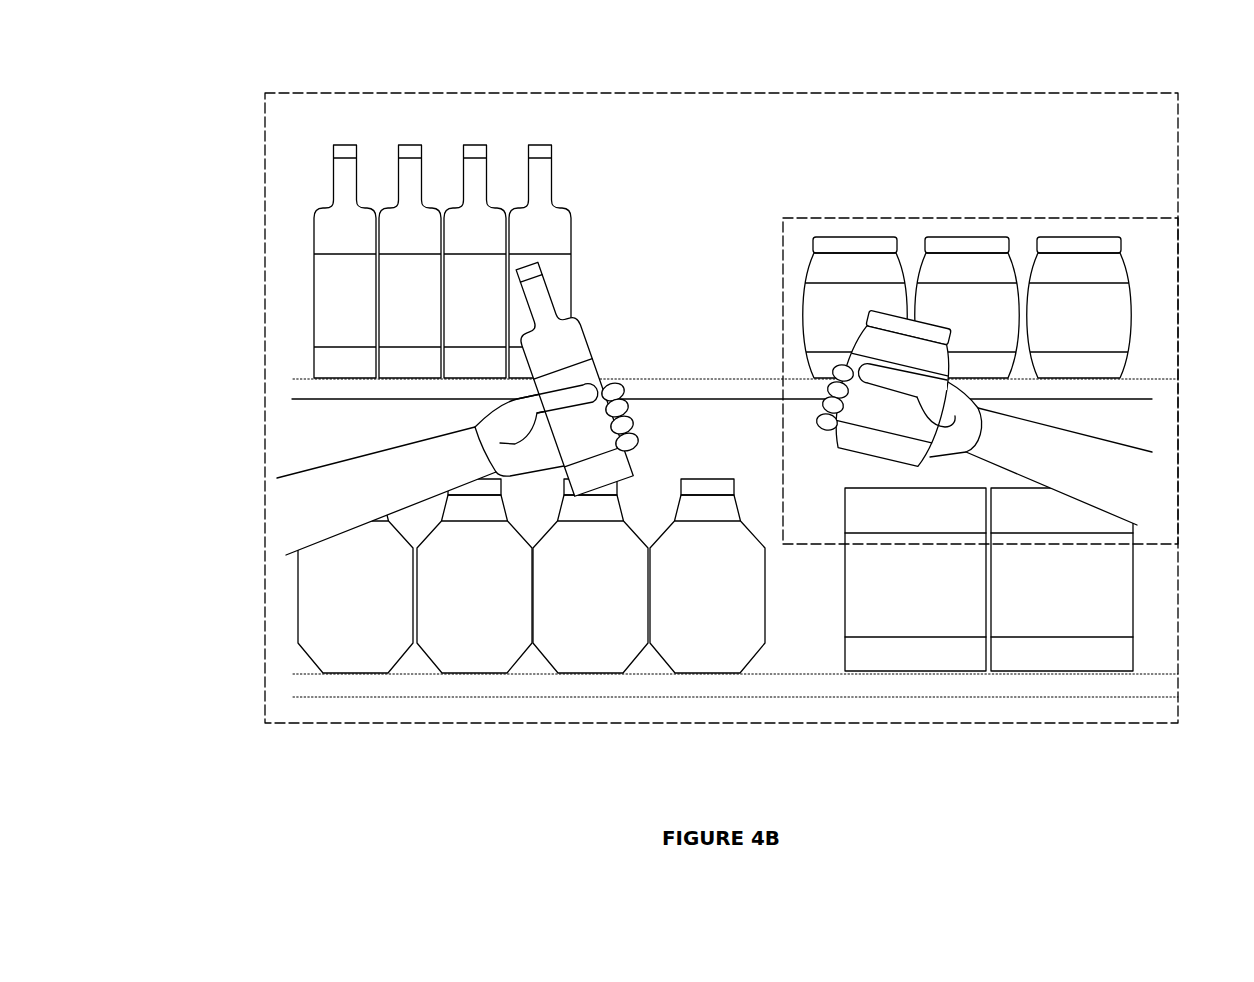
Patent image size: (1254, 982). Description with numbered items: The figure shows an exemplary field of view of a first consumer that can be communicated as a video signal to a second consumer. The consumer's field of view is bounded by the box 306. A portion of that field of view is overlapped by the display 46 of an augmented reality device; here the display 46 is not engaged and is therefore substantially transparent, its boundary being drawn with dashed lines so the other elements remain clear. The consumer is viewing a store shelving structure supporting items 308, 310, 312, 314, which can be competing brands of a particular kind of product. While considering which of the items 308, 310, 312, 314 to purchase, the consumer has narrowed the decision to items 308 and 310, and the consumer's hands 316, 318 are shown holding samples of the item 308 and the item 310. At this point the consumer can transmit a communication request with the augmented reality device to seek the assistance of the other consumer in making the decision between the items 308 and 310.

The box bounding the field of view 306 is at (1120, 93).
The display 46 is at (1120, 218).
The item 308 is at (345, 290).
The item 310 is at (859, 271).
The item 312 is at (475, 630).
The item 314 is at (1012, 590).
The consumer's hand 316 is at (528, 452).
The consumer's hand 318 is at (945, 442).